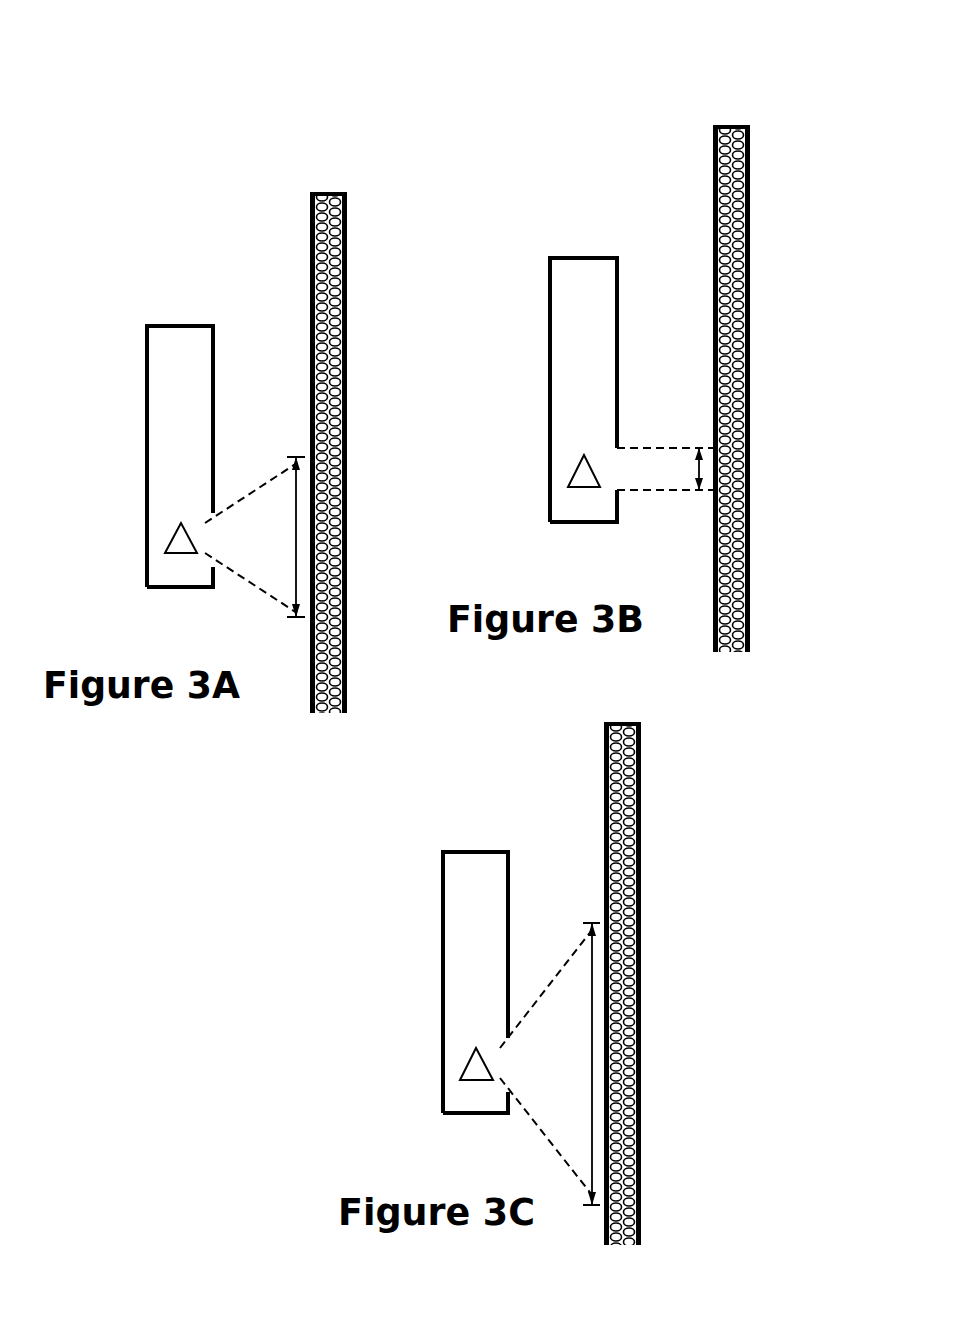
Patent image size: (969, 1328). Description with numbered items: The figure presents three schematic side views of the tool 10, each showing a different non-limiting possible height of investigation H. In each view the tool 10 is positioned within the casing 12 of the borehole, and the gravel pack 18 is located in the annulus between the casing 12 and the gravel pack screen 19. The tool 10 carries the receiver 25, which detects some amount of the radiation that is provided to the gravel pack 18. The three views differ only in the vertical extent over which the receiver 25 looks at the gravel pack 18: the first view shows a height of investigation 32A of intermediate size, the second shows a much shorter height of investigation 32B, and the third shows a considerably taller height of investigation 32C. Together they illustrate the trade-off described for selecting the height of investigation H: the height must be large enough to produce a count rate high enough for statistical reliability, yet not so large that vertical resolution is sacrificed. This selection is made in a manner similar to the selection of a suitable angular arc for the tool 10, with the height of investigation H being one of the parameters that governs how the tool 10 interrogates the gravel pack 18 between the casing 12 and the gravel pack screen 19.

In FIG. 3A, the tool 10 is at (163, 313).
In FIG. 3B, the tool 10 is at (566, 247).
In FIG. 3C, the tool 10 is at (455, 838).
In FIG. 3A, the casing 12 is at (346, 291).
In FIG. 3B, the casing 12 is at (750, 221).
In FIG. 3C, the casing 12 is at (642, 819).
In FIG. 3A, the gravel pack 18 is at (328, 183).
In FIG. 3B, the gravel pack 18 is at (732, 115).
In FIG. 3C, the gravel pack 18 is at (623, 714).
In FIG. 3A, the gravel pack screen 19 is at (310, 238).
In FIG. 3B, the gravel pack screen 19 is at (713, 170).
In FIG. 3C, the gravel pack screen 19 is at (604, 810).
In FIG. 3A, the receiver 25 is at (176, 548).
In FIG. 3B, the receiver 25 is at (574, 483).
In FIG. 3C, the receiver 25 is at (471, 1073).
In FIG. 3A, the height of investigation 32A is at (255, 537).
In FIG. 3B, the height of investigation 32B is at (665, 469).
In FIG. 3C, the height of investigation 32C is at (550, 1064).
In FIG. 3A, the height of investigation H is at (281, 497).
In FIG. 3B, the height of investigation H is at (686, 447).
In FIG. 3C, the height of investigation H is at (578, 1027).